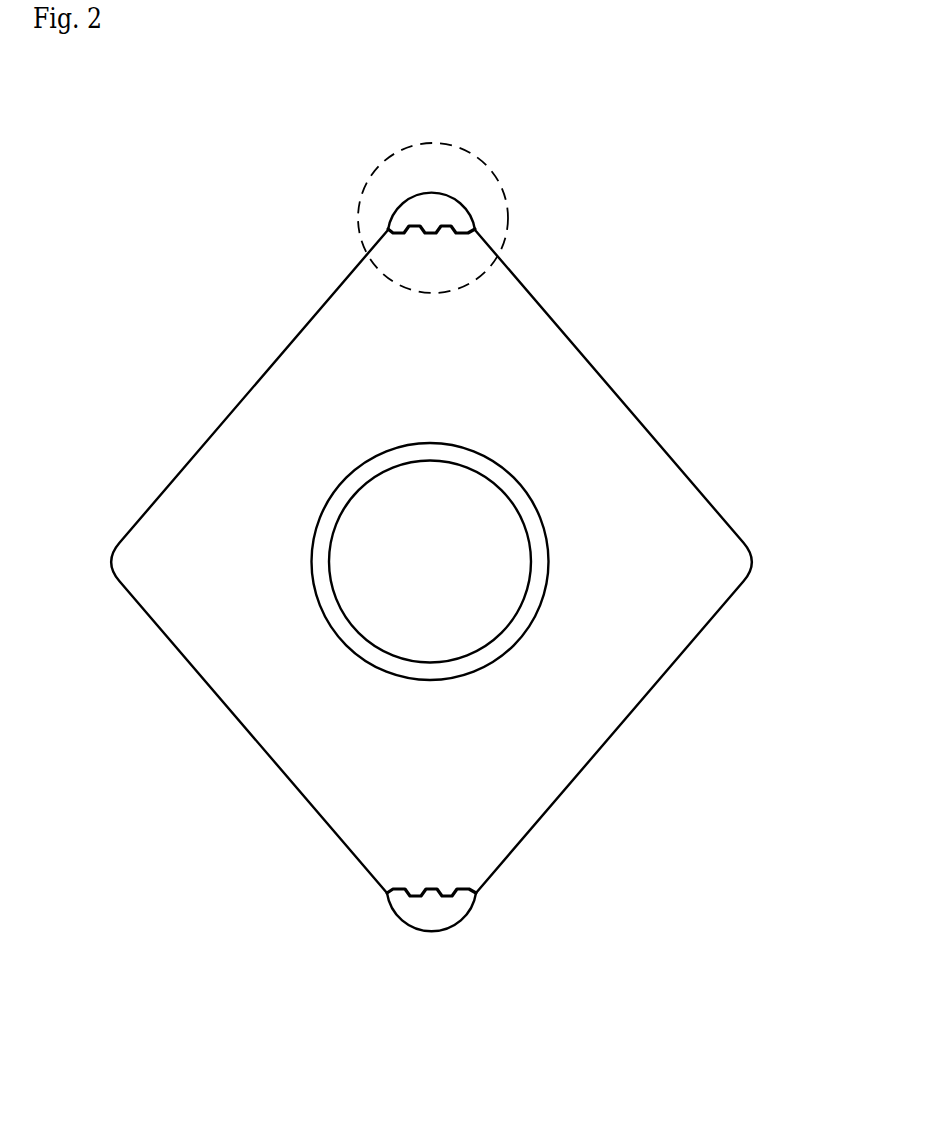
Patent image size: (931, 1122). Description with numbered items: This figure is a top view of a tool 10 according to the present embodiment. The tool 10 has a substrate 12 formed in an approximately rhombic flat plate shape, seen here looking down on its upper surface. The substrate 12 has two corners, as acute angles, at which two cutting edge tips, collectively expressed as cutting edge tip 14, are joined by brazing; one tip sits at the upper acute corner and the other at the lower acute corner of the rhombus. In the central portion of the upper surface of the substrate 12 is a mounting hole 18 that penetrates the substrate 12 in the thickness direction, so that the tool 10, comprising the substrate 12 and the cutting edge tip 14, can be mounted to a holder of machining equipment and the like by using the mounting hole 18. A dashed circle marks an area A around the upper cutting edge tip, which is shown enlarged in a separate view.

The tool 10 is at (449, 575).
The substrate 12 is at (567, 418).
The cutting edge tip 14 is at (433, 207).
The mounting hole 18 is at (347, 490).
The area A is at (372, 172).